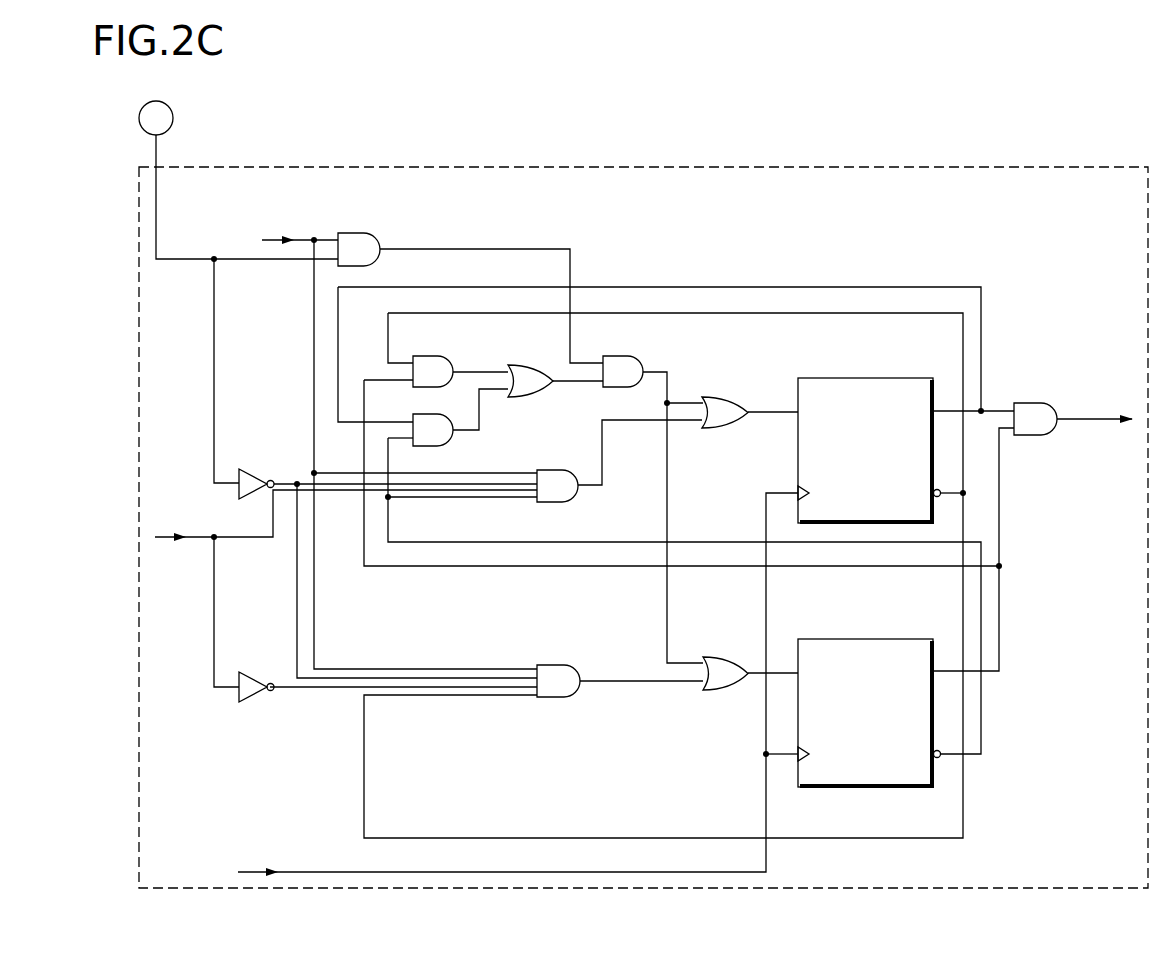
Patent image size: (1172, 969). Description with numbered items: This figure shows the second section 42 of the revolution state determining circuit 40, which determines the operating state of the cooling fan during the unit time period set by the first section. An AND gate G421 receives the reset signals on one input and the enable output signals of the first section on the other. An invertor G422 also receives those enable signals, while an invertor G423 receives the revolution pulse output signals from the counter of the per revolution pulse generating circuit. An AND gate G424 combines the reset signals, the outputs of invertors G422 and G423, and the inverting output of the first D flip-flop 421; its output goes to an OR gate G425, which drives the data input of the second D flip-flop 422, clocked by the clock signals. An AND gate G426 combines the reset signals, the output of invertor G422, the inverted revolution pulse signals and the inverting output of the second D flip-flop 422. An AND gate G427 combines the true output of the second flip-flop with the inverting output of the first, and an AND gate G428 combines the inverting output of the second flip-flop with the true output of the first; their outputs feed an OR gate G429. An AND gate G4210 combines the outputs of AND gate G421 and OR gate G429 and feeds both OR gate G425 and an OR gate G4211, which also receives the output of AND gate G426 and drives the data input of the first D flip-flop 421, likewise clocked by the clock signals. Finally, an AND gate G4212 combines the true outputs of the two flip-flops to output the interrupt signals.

The revolution state determining circuit 40 is at (562, 132).
The second section 42 is at (692, 166).
The first D flip-flop 421 is at (869, 424).
The second D flip-flop 422 is at (866, 639).
The AND gate G421 is at (359, 236).
The invertor G422 is at (251, 471).
The invertor G423 is at (251, 674).
The AND gate G424 is at (551, 667).
The OR gate G425 is at (718, 657).
The AND gate G426 is at (551, 472).
The AND gate G427 is at (429, 357).
The AND gate G428 is at (429, 418).
The OR gate G429 is at (522, 369).
The AND gate G4210 is at (618, 357).
The OR gate G4211 is at (718, 399).
The AND gate G4212 is at (1060, 402).